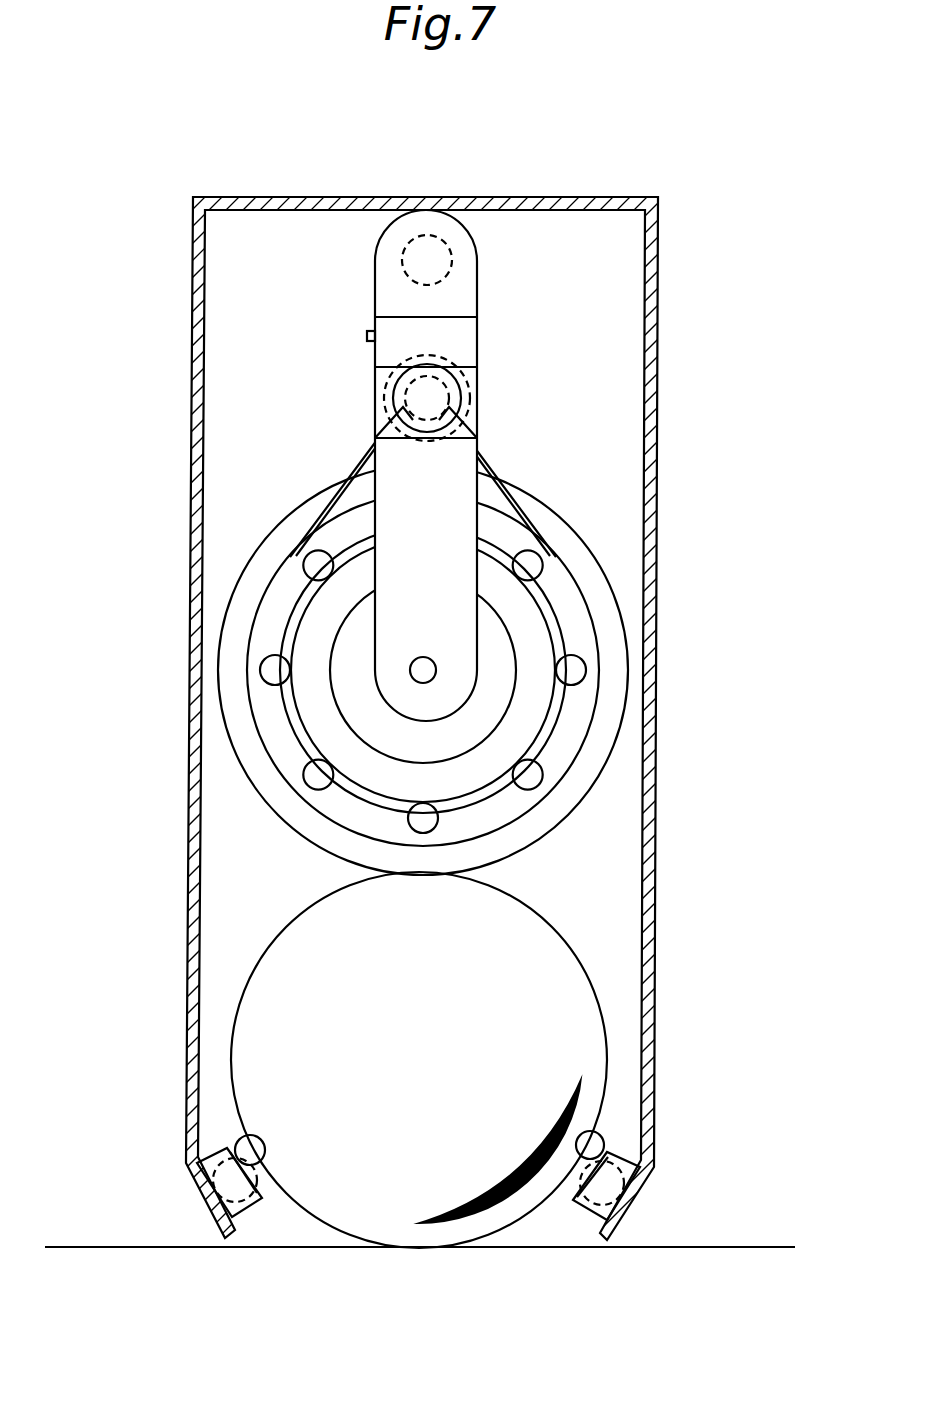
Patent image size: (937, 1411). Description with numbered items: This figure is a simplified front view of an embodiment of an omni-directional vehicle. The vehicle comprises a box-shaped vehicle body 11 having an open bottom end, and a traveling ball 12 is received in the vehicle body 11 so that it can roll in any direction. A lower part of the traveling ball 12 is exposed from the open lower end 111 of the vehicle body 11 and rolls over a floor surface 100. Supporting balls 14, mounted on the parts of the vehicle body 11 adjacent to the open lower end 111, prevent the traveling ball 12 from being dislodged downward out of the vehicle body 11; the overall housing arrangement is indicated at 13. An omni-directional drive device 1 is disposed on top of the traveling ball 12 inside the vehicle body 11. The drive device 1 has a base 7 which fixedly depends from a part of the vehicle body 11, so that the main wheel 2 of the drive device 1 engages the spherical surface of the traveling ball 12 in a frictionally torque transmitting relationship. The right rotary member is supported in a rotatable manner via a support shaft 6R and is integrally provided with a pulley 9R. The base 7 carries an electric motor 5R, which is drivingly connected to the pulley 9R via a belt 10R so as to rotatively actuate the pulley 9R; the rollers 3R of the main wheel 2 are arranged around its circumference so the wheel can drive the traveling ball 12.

The omni-directional drive device 1 is at (474, 542).
The main wheel 2 is at (543, 835).
The free rollers 3R is at (583, 672).
The electric motor 5R is at (470, 390).
The support shaft 6R is at (436, 667).
The base 7 is at (482, 316).
The pulley 9R is at (588, 653).
The belt 10R is at (503, 470).
The vehicle body 11 is at (653, 848).
The traveling ball 12 is at (541, 932).
The housing 13 is at (672, 1000).
The supporting balls 14 is at (240, 1140).
The floor surface 100 is at (703, 1247).
The open lower end 111 is at (552, 1227).